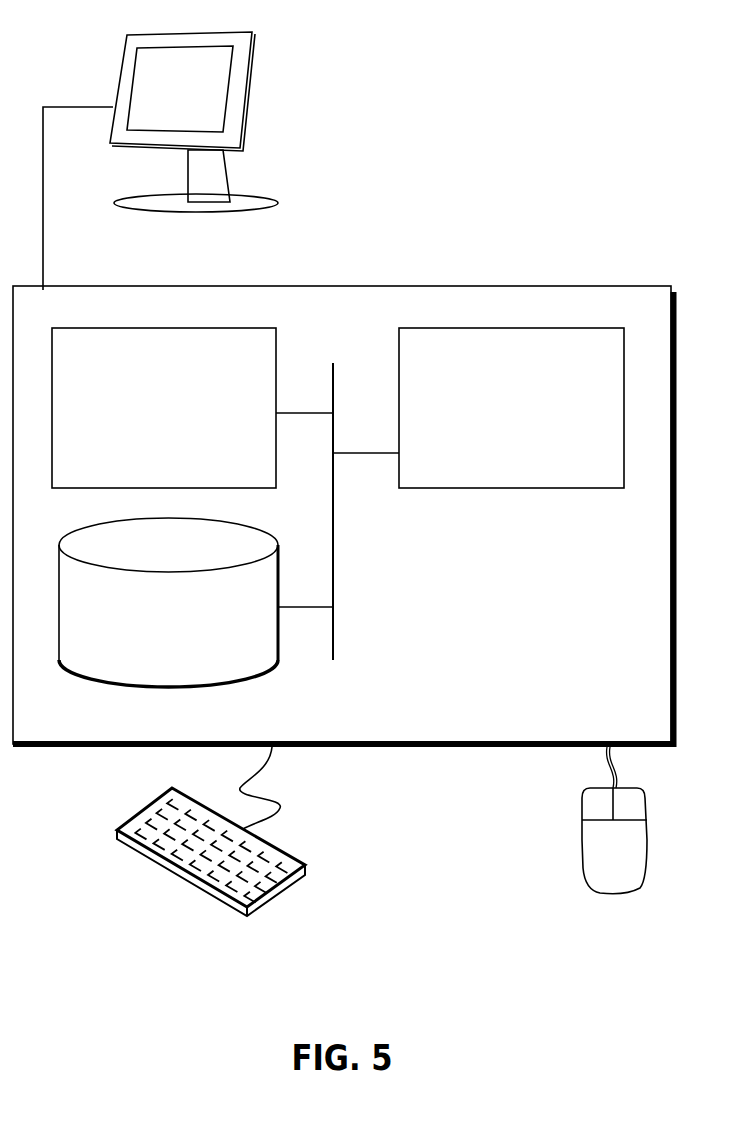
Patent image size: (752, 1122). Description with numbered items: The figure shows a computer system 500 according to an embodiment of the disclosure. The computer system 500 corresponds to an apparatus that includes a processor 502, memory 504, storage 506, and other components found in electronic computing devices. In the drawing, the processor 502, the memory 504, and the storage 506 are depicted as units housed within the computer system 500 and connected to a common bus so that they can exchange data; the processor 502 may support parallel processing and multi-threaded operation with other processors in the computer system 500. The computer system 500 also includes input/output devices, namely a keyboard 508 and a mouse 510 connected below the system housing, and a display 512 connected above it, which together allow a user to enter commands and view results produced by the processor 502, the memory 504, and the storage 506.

The computer system 500 is at (388, 265).
The processor 502 is at (491, 419).
The memory 504 is at (142, 419).
The storage 506 is at (150, 631).
The keyboard 508 is at (135, 850).
The mouse 510 is at (592, 864).
The display 512 is at (160, 161).